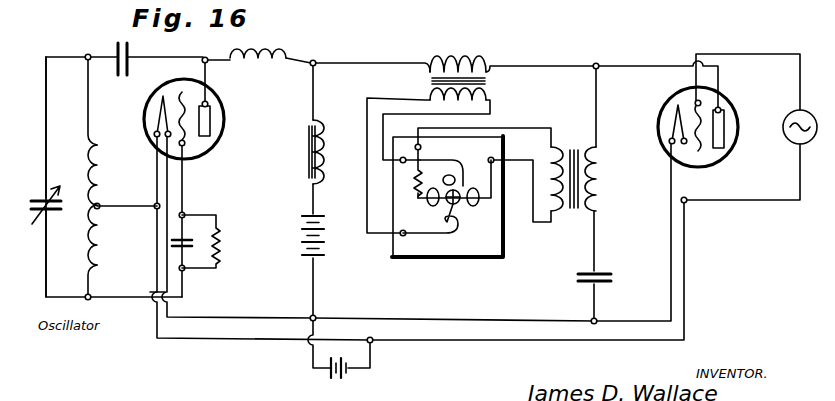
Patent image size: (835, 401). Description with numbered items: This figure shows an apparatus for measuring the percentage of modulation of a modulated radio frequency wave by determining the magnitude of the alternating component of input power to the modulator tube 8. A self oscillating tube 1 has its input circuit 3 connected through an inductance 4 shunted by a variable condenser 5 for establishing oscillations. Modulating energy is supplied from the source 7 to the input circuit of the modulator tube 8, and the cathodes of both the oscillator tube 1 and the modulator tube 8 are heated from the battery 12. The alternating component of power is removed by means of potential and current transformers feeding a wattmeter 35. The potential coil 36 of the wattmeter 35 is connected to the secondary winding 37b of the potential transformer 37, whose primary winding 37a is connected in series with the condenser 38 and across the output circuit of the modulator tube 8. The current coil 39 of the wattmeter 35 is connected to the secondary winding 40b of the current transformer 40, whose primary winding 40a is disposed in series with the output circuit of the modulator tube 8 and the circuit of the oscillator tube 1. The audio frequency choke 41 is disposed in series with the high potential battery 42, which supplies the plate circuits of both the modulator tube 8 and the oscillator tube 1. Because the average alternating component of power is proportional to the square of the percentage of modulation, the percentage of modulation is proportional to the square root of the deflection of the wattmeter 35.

The self oscillating tube 1 is at (207, 149).
The input circuit 3 is at (165, 291).
The inductance 4 is at (92, 182).
The variable condenser 5 is at (37, 223).
The source 7 is at (813, 103).
The modulator tube 8 is at (750, 110).
The battery 12 is at (334, 377).
The wattmeter 35 is at (510, 264).
The potential coil 36 is at (447, 201).
The potential transformer 37 is at (567, 218).
The primary winding 37a is at (585, 230).
The secondary winding 37b is at (565, 142).
The condenser 38 is at (588, 287).
The current coil 39 is at (458, 226).
The current transformer 40 is at (494, 82).
The primary winding 40a is at (484, 64).
The secondary winding 40b is at (488, 101).
The audio frequency choke 41 is at (290, 118).
The high potential battery 42 is at (298, 230).